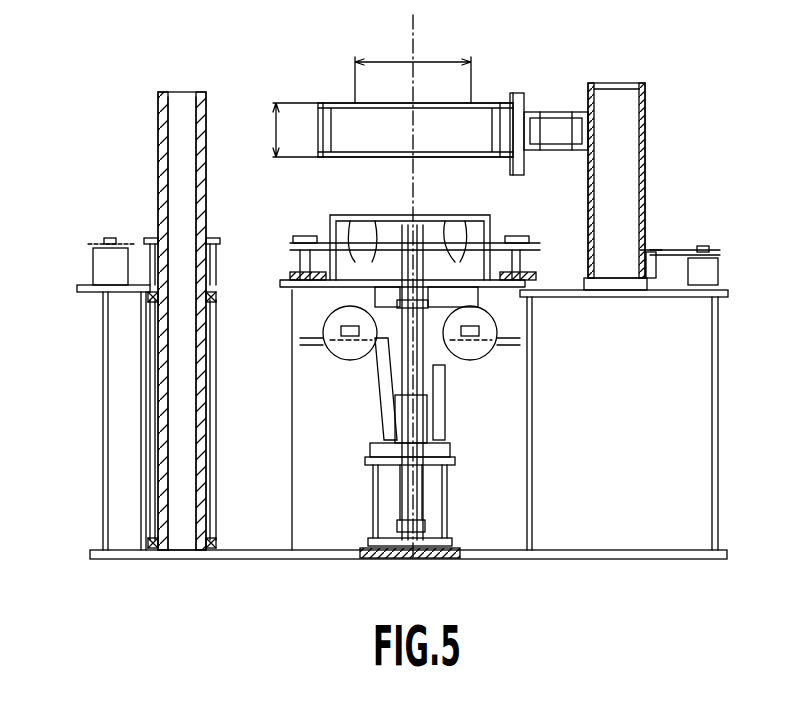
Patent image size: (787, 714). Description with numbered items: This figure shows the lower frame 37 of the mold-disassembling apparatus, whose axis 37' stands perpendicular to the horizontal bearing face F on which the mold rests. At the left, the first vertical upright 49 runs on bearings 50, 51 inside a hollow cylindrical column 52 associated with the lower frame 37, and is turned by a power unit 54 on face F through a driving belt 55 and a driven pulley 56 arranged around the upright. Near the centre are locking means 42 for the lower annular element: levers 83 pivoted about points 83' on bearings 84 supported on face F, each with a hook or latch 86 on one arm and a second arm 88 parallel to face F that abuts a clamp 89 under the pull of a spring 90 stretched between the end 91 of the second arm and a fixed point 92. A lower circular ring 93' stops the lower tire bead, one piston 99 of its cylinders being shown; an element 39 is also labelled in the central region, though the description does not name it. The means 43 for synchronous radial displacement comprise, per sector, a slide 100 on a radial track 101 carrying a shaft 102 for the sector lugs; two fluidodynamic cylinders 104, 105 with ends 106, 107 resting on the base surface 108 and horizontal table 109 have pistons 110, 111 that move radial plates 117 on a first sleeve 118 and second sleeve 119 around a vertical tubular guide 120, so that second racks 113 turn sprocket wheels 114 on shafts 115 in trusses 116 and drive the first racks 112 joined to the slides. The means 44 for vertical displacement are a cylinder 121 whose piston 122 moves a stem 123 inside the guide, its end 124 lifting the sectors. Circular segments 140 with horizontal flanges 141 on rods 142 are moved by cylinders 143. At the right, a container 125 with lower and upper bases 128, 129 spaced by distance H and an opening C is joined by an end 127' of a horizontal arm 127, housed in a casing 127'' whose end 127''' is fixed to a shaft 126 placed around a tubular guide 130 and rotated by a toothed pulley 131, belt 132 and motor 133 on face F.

The lower frame 37 is at (524, 219).
The axis of the lower frame 37' is at (455, 17).
The centering mandrel 39 is at (415, 215).
The locking means 42 is at (370, 260).
The means for effecting radial synchronous displacements 43 is at (345, 358).
The means for effecting vertical displacements 44 is at (400, 415).
The first vertical upright 49 is at (200, 130).
The bearing 50 is at (182, 323).
The bearing 51 is at (215, 540).
The hollow cylindrical column 52 is at (215, 500).
The power unit 54 is at (108, 262).
The driving belt 55 is at (148, 242).
The driven pulley 56 is at (210, 242).
The lever 83 is at (321, 211).
The pivot point 83' is at (255, 268).
The bearing 84 is at (310, 250).
The hook or latch 86 is at (355, 260).
The second arm 88 is at (320, 295).
The clamp 89 is at (385, 262).
The spring 90 is at (400, 262).
The end of the second arm 91 is at (330, 300).
The fixed point 92 is at (405, 262).
The lower circular ring 93' is at (503, 220).
The piston 99 is at (530, 300).
The slide 100 is at (310, 292).
The track 101 is at (300, 290).
The shaft 102 is at (410, 215).
The fluidodynamic cylinder 104 is at (375, 485).
The fluidodynamic cylinder 105 is at (445, 500).
The cylinder end 106 is at (360, 555).
The cylinder end 107 is at (375, 455).
The base surface 108 is at (455, 558).
The horizontal table 109 is at (455, 475).
The piston 110 is at (380, 445).
The piston 111 is at (430, 445).
The first rack 112 is at (426, 297).
The second rack 113 is at (380, 345).
The sprocket wheel 114 is at (360, 320).
The rotatable shaft 115 is at (340, 305).
The truss 116 is at (350, 310).
The radial plate 117 is at (440, 400).
The first sleeve 118 is at (450, 470).
The second sleeve 119 is at (440, 370).
The vertical tubular guide 120 is at (530, 340).
The fluidodynamic cylinder 121 is at (450, 530).
The piston 122 is at (400, 500).
The stem 123 is at (380, 400).
The end of the stem 124 is at (425, 228).
The container 125 is at (320, 110).
The shaft 126 is at (640, 100).
The horizontal radially-extending arm 127 is at (570, 97).
The arm end 127' is at (520, 106).
The cylindrical envelope or casing 127'' is at (565, 79).
The casing end 127''' is at (669, 118).
The lower base surface 128 is at (340, 155).
The upper base surface 129 is at (345, 103).
The tubular guide 130 is at (625, 160).
The toothed pulley 131 is at (650, 270).
The belt 132 is at (690, 265).
The motor 133 is at (715, 265).
The circular segment 140 is at (340, 255).
The horizontal flange 141 is at (345, 258).
The rod 142 is at (350, 262).
The cylinder 143 is at (300, 243).
The distance between container bases H is at (293, 130).
The opening C is at (413, 67).
The horizontal face F is at (540, 285).